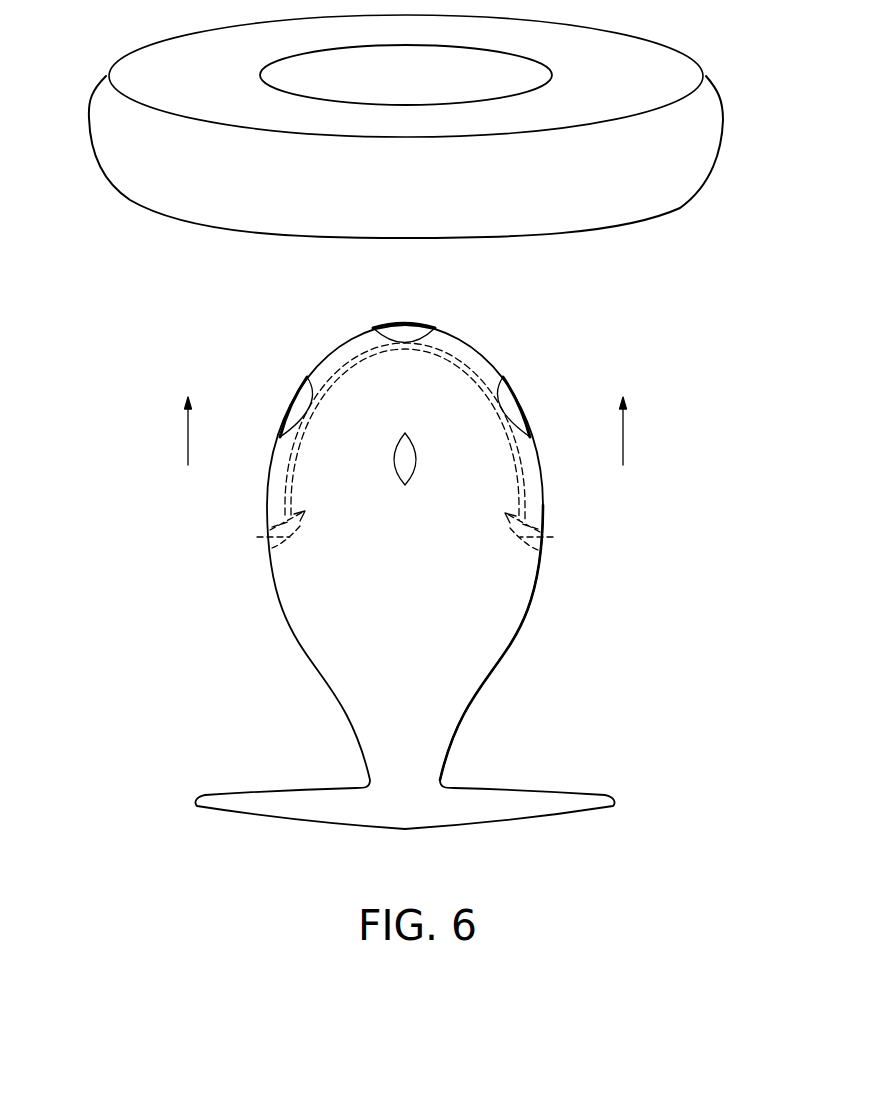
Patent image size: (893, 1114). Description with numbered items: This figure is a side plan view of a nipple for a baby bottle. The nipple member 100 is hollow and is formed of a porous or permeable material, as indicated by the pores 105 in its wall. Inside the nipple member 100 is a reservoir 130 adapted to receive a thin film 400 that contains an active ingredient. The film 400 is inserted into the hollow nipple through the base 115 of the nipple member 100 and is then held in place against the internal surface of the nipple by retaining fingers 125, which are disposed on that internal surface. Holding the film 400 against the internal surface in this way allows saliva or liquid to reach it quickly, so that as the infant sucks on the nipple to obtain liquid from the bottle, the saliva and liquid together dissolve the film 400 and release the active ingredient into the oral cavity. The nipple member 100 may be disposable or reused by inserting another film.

The nipple member 100 is at (687, 327).
The pores 105 is at (417, 332).
The base 115 is at (195, 801).
The retaining fingers 125 is at (267, 534).
The reservoir 130 is at (523, 488).
The film 400 is at (517, 462).